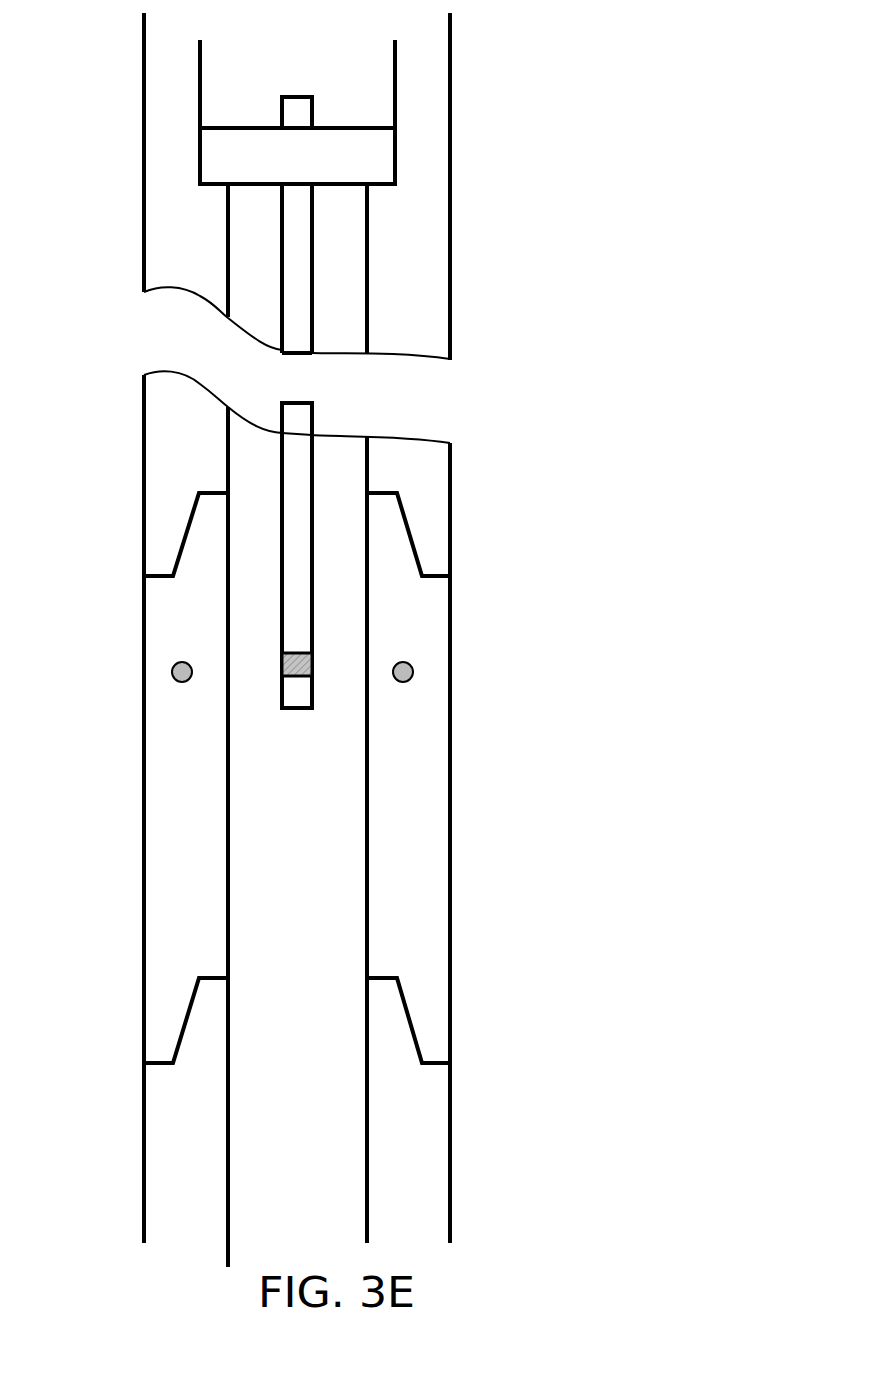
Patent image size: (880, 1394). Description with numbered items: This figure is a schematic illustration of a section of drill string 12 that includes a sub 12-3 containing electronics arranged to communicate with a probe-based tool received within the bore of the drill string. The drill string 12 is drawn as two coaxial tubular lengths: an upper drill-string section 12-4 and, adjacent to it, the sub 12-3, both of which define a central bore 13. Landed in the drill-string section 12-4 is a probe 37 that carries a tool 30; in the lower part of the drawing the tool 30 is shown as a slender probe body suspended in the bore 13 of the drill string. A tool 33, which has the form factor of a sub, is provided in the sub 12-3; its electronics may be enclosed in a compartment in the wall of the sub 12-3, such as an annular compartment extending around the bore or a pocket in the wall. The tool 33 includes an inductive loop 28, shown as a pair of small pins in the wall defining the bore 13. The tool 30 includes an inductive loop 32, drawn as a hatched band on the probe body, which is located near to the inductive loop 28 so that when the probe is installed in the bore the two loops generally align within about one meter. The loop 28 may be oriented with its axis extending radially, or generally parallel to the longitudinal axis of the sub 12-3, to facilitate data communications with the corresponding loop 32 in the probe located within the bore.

The drill string 12 is at (646, 181).
The drill-string section 12-4 is at (450, 181).
The sub 12-3 is at (450, 793).
The probe 37 is at (312, 290).
The tool 30 is at (297, 476).
The inductive loop 32 is at (282, 668).
The inductive loop 28 is at (413, 672).
The tool 33 is at (420, 877).
The bore 13 is at (297, 837).